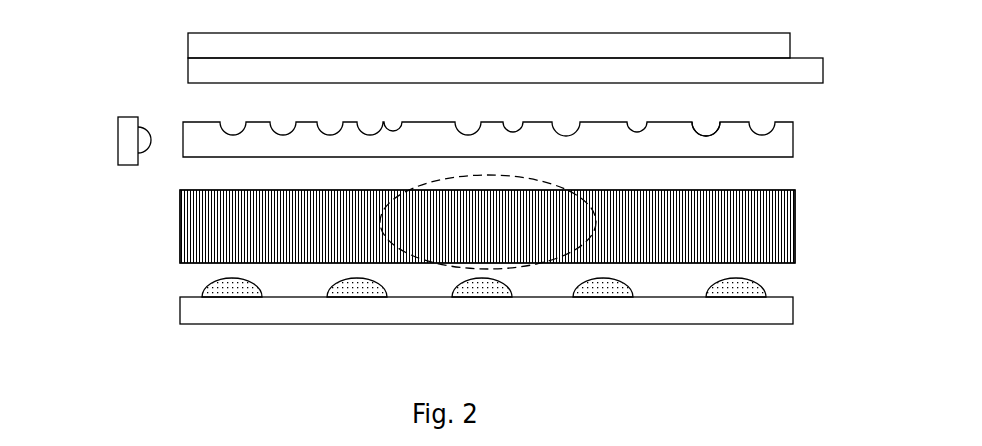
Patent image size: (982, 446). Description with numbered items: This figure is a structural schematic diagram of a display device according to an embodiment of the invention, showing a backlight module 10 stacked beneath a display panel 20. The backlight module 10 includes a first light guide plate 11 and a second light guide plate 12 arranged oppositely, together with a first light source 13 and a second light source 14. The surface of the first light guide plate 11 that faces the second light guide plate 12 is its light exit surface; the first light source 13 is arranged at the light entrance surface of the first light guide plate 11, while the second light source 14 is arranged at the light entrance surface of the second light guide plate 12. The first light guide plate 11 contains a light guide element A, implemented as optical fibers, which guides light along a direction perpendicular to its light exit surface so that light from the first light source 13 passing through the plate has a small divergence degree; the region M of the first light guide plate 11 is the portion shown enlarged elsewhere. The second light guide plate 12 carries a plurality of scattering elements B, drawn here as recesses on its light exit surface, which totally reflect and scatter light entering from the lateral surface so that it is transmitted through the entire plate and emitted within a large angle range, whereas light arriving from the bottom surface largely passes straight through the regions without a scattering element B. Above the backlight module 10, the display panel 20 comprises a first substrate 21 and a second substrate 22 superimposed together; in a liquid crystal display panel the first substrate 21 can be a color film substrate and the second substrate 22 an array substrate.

The backlight module 10 is at (59, 135).
The first light guide plate 11 is at (180, 228).
The second light guide plate 12 is at (256, 145).
The first light source 13 is at (250, 312).
The second light source 14 is at (128, 137).
The display panel 20 is at (54, 40).
The first substrate 21 is at (218, 48).
The second substrate 22 is at (218, 73).
The light guide element A is at (713, 219).
The scattering element B is at (713, 135).
The region M is at (520, 268).